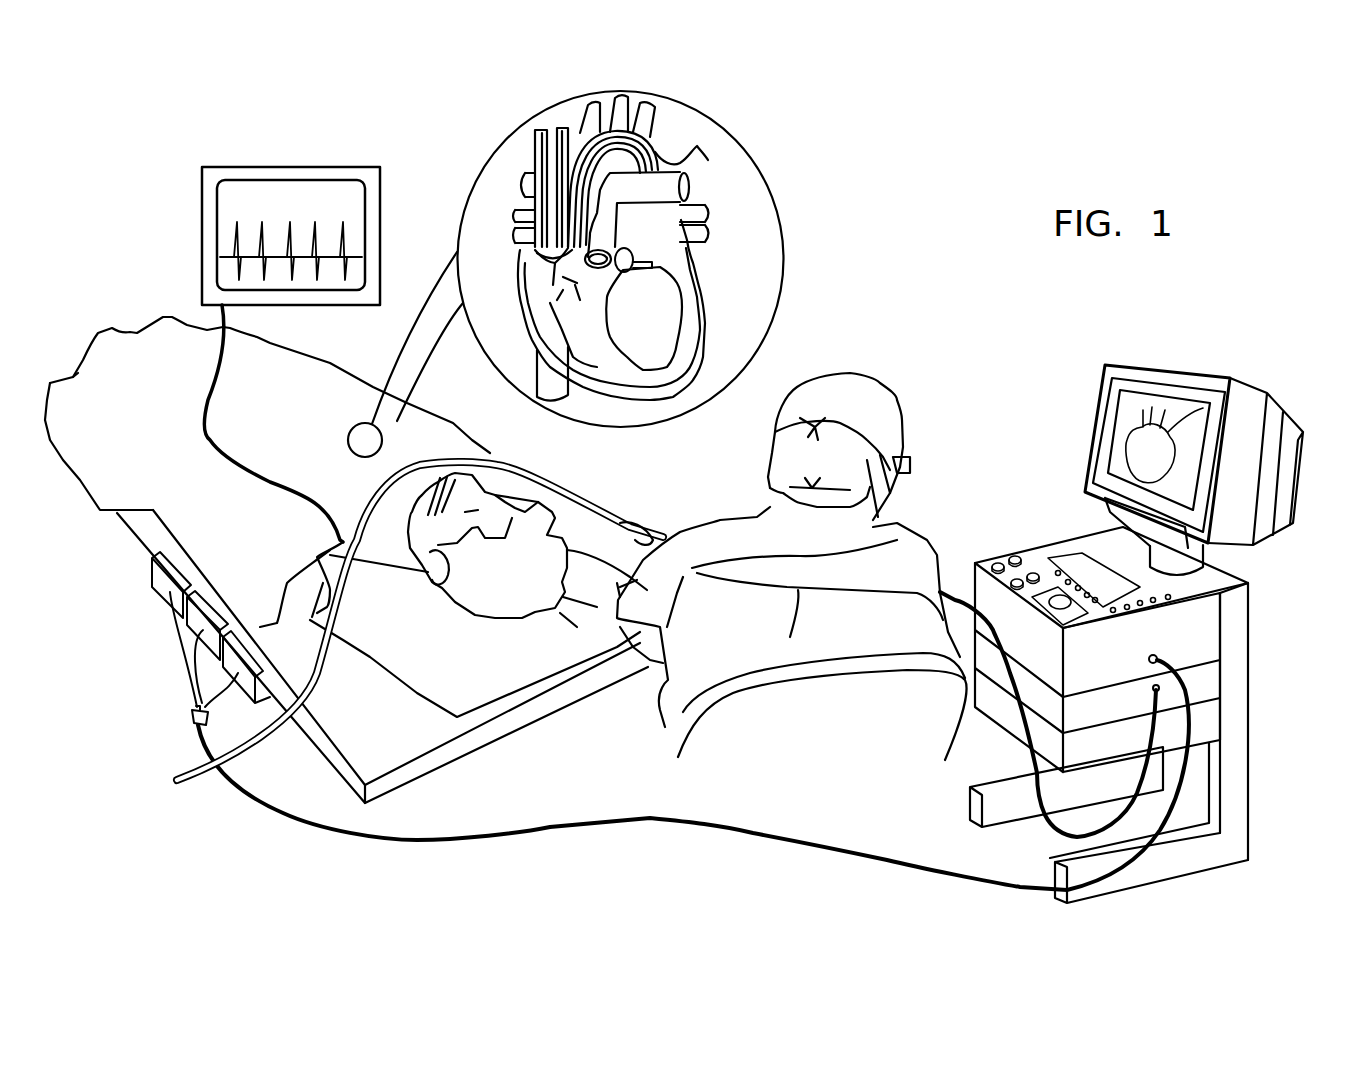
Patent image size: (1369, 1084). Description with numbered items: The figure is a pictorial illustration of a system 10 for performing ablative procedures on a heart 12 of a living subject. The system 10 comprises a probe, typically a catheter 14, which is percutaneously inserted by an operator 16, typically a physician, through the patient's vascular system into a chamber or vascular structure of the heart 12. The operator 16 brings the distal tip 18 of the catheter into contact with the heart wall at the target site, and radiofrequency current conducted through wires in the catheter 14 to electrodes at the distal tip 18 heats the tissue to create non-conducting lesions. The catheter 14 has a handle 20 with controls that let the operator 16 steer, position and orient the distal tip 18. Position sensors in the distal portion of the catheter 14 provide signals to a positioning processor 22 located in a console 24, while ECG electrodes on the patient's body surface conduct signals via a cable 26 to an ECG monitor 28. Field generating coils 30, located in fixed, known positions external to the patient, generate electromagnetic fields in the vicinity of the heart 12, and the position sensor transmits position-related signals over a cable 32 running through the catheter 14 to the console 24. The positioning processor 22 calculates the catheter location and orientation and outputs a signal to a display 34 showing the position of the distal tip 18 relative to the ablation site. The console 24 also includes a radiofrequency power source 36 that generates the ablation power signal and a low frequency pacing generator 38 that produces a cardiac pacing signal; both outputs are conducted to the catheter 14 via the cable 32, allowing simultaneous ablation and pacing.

The system 10 is at (983, 327).
The heart 12 is at (695, 307).
The catheter 14 is at (708, 160).
The operator 16 is at (897, 540).
The distal tip 18 is at (640, 272).
The handle 20 is at (641, 527).
The positioning processor 22 is at (1210, 683).
The console 24 is at (1266, 664).
The cable 26 is at (205, 418).
The ECG monitor 28 is at (380, 188).
The field generating coils 30 is at (240, 643).
The cable 32 is at (1149, 661).
The display 34 is at (1247, 398).
The radiofrequency power source 36 is at (1210, 627).
The pacing generator 38 is at (1210, 725).